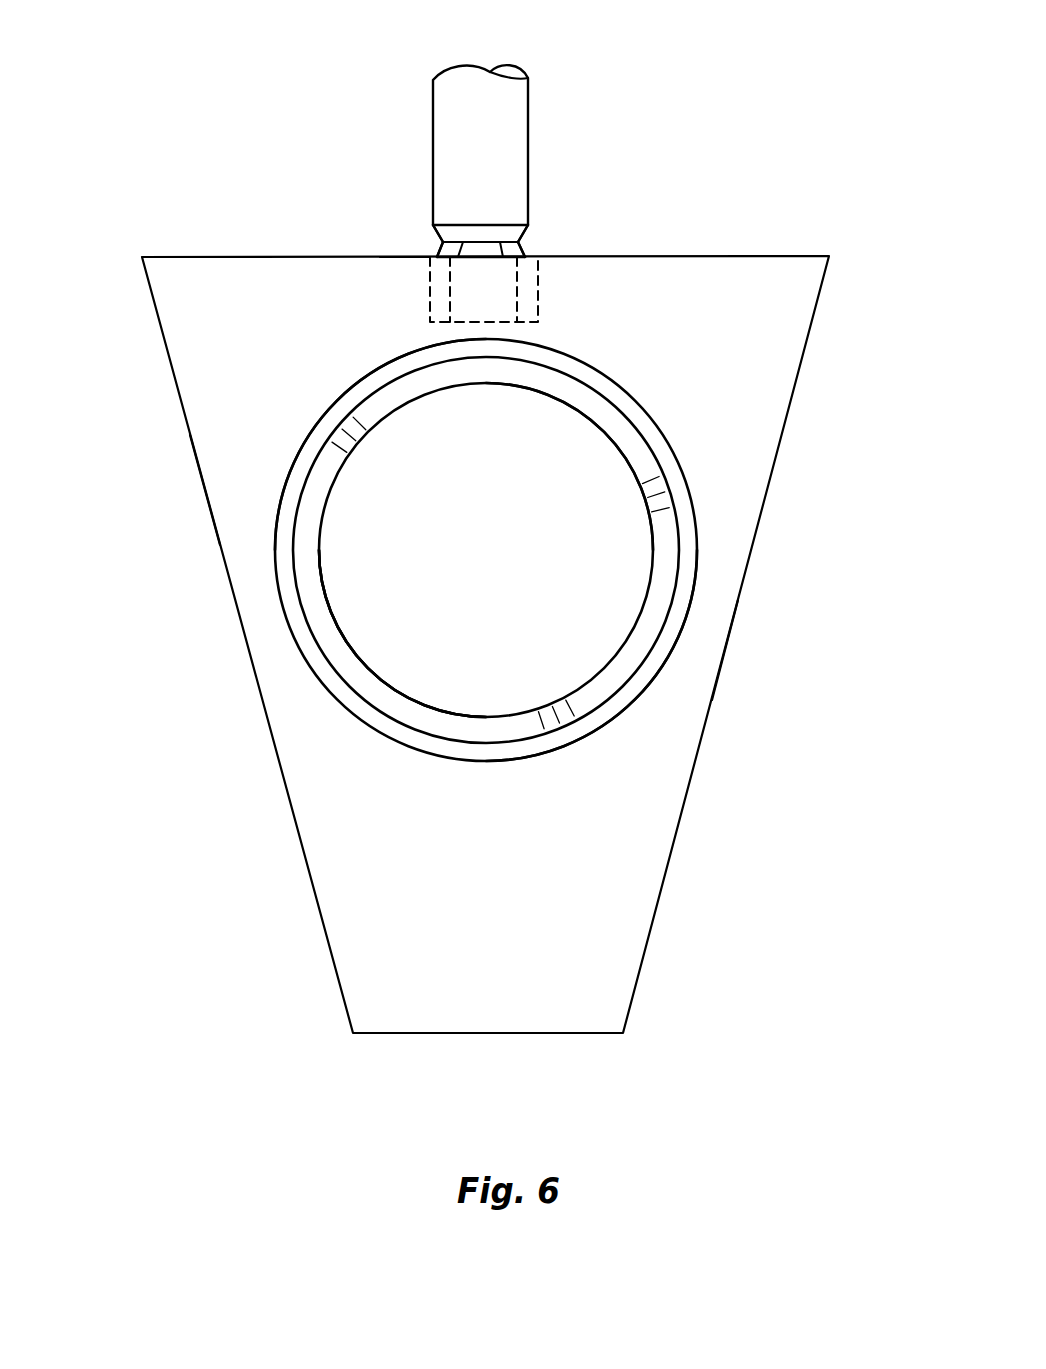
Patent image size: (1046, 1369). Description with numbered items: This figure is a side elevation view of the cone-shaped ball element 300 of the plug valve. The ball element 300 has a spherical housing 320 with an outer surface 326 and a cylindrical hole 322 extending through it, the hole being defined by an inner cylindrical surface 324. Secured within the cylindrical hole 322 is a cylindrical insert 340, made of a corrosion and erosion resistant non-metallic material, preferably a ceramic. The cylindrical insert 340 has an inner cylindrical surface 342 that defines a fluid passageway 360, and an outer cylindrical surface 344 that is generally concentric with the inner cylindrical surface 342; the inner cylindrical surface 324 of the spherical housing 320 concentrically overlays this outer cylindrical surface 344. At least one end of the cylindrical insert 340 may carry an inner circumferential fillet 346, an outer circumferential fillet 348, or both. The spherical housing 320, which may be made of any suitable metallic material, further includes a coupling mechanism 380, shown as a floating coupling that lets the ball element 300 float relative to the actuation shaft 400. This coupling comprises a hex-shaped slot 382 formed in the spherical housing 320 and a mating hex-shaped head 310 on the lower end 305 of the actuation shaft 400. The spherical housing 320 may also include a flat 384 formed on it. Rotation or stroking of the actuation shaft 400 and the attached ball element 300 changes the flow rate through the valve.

The ball element 300 is at (661, 890).
The spherical housing 320 is at (698, 628).
The cylindrical hole 322 is at (507, 507).
The inner cylindrical surface 324 is at (340, 403).
The outer surface 326 is at (205, 490).
The cylindrical insert 340 is at (623, 697).
The inner cylindrical surface 342 is at (578, 418).
The outer cylindrical surface 344 is at (688, 478).
The inner circumferential fillet 346 is at (347, 665).
The outer circumferential fillet 348 is at (305, 622).
The fluid passageway 360 is at (507, 589).
The coupling mechanism 380 is at (420, 225).
The hex-shaped slot 382 is at (538, 295).
The flat 384 is at (402, 256).
The lower end 305 is at (530, 217).
The hex-shaped head 310 is at (525, 252).
The actuation shaft 400 is at (528, 127).